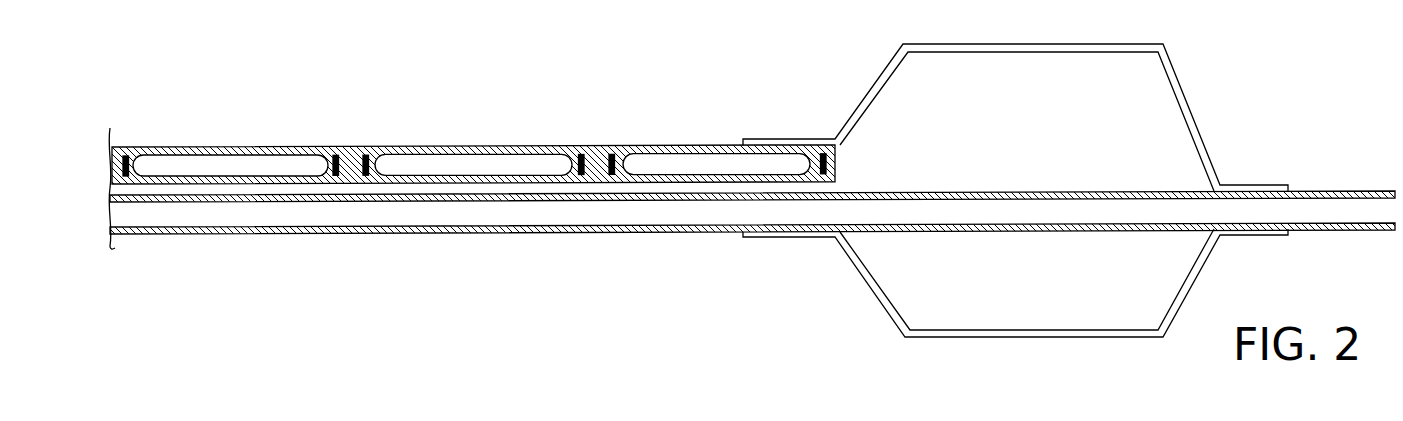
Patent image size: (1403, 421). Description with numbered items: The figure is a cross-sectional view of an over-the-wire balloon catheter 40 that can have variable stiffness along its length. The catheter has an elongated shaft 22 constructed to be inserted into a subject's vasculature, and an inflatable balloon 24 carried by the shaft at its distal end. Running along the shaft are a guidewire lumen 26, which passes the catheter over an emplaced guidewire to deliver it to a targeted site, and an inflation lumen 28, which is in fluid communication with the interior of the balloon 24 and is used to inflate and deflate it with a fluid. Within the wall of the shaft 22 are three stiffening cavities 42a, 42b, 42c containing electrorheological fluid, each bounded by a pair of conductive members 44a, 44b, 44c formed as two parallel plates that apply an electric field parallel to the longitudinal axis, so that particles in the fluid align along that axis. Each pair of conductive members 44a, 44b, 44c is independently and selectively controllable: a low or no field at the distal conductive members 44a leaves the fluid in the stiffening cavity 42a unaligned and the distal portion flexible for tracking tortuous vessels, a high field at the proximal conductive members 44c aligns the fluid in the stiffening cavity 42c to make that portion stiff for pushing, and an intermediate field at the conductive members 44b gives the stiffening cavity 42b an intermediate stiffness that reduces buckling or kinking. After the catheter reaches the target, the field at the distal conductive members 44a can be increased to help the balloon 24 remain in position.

The balloon catheter 40 is at (752, 183).
The elongated shaft 22 is at (638, 233).
The inflatable balloon 24 is at (1205, 143).
The guidewire lumen 26 is at (1300, 210).
The inflation lumen 28 is at (833, 186).
The stiffening cavity 42a is at (696, 161).
The stiffening cavity 42b is at (469, 157).
The stiffening cavity 42c is at (197, 158).
The conductive members 44a is at (611, 154).
The conductive members 44b is at (366, 151).
The conductive members 44c is at (337, 151).